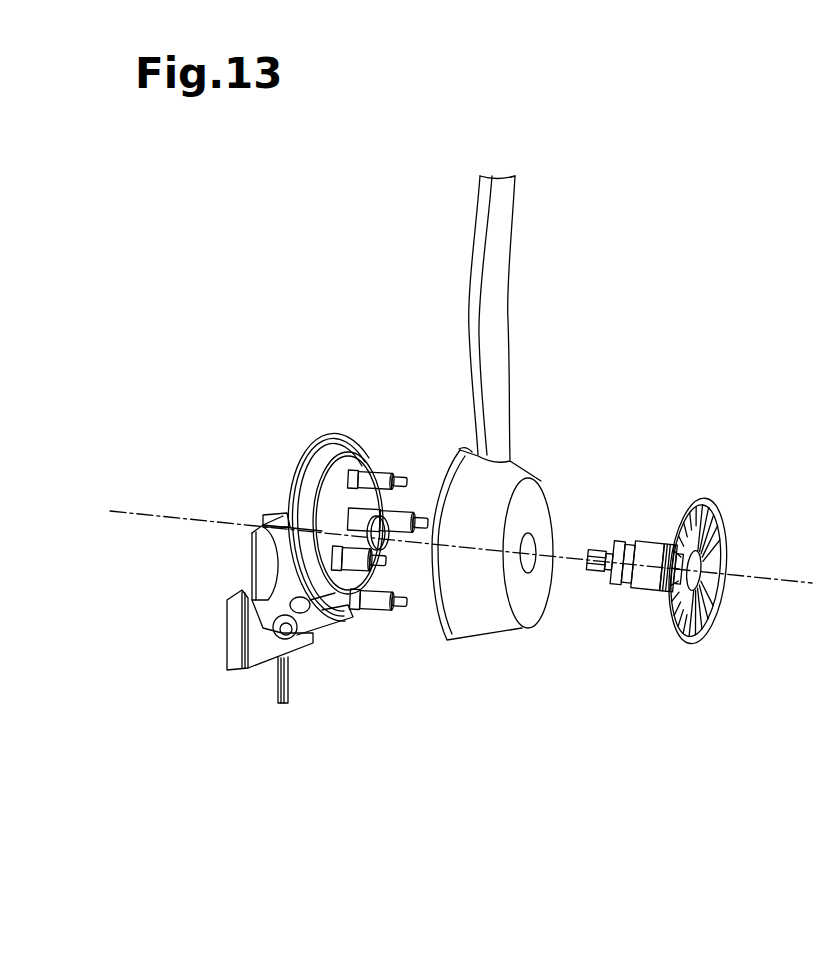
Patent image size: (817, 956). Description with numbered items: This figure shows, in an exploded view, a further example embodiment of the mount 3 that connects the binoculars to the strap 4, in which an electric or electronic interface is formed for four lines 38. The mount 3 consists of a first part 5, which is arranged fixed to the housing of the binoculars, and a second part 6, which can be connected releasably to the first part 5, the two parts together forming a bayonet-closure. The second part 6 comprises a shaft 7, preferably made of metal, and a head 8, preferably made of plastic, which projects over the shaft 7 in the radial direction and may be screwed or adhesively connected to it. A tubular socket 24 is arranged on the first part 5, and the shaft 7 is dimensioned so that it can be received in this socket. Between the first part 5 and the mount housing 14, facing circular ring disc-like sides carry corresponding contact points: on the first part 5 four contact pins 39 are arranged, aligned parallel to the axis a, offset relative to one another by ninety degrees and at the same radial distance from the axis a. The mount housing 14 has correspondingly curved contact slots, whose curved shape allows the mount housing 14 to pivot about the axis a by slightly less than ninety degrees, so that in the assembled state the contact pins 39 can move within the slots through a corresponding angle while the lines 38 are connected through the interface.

The mount 3 is at (355, 207).
The strap 4 is at (553, 265).
The first part 5 is at (290, 653).
The second part 6 is at (674, 531).
The shaft 7 is at (648, 597).
The head 8 is at (705, 648).
The mount housing 14 is at (522, 638).
The tubular socket 24 is at (389, 557).
The lines 38 is at (298, 705).
The contact pins 39 is at (387, 465).
The axis a is at (746, 577).